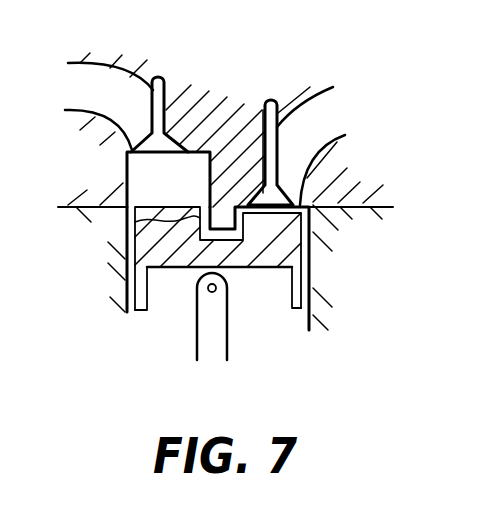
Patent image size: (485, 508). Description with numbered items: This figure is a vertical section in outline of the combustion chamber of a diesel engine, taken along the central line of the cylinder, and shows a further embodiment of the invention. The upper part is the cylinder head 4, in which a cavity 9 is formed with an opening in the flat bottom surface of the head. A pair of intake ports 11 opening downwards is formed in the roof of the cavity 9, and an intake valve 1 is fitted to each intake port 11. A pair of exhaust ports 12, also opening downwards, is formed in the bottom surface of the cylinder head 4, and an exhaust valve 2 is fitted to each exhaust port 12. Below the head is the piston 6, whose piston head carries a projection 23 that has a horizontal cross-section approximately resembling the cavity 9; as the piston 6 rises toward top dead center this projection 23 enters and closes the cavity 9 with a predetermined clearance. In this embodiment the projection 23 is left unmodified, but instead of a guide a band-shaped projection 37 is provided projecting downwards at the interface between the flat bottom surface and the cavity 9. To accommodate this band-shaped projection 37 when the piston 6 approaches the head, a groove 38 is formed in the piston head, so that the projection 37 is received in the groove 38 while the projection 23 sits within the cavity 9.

The intake valve 1 is at (162, 79).
The exhaust valve 2 is at (273, 101).
The cylinder head 4 is at (345, 170).
The piston 6 is at (313, 265).
The cavity 9 is at (127, 155).
The intake port 11 is at (83, 86).
The exhaust port 12 is at (315, 122).
The projection 23 is at (129, 184).
The band-shaped projection 37 is at (127, 226).
The groove 38 is at (127, 257).